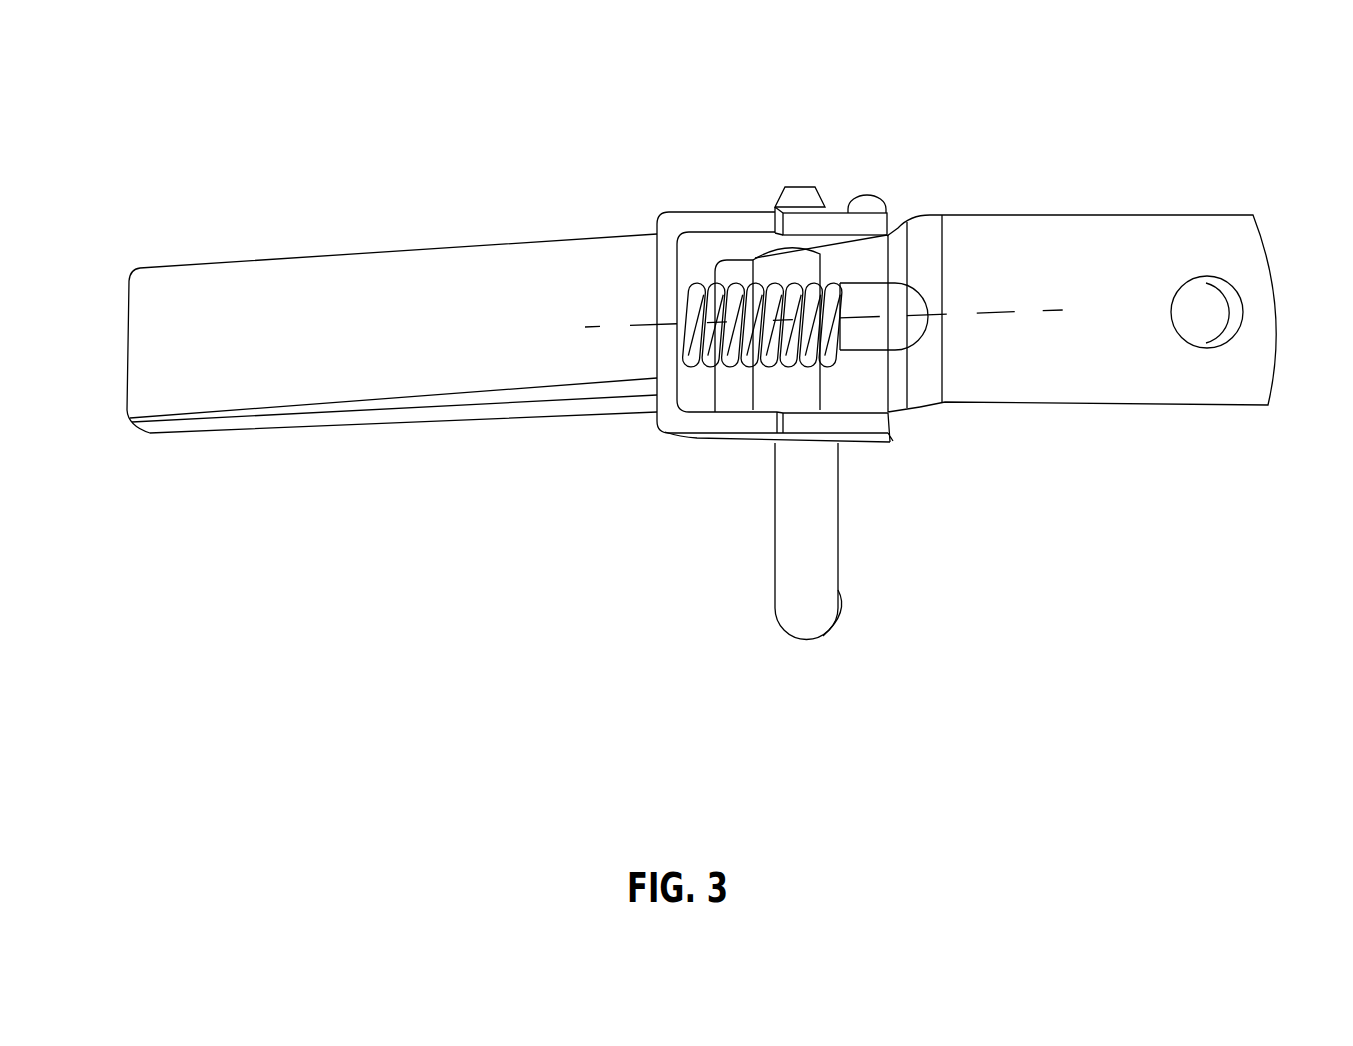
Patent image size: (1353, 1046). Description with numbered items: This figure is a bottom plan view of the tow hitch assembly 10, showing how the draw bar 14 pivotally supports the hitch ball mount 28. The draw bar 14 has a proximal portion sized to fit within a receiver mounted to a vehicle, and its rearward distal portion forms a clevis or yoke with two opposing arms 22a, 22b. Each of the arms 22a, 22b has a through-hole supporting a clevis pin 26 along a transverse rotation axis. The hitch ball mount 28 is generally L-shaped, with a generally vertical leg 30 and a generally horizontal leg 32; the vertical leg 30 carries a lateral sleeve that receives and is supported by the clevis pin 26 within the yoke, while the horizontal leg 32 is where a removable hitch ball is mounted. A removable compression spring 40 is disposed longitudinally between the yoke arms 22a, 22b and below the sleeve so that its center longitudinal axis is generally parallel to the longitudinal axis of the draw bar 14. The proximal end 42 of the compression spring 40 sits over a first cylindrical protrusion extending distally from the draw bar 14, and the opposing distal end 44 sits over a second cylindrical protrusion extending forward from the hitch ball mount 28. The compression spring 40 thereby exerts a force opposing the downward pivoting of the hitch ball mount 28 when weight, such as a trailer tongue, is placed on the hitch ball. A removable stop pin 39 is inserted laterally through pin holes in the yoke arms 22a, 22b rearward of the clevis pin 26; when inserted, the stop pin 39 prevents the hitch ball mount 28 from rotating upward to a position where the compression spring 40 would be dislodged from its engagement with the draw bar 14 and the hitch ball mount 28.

The tow hitch assembly 10 is at (504, 150).
The draw bar 14 is at (217, 380).
The yoke arm 22a is at (706, 217).
The yoke arm 22b is at (758, 422).
The clevis pin 26 is at (798, 588).
The hitch ball mount 28 is at (1119, 367).
The vertical leg 30 is at (863, 378).
The horizontal leg 32 is at (1199, 237).
The removable stop pin 39 is at (870, 203).
The compression spring 40 is at (793, 293).
The proximal end 42 is at (768, 348).
The distal end 44 is at (836, 306).